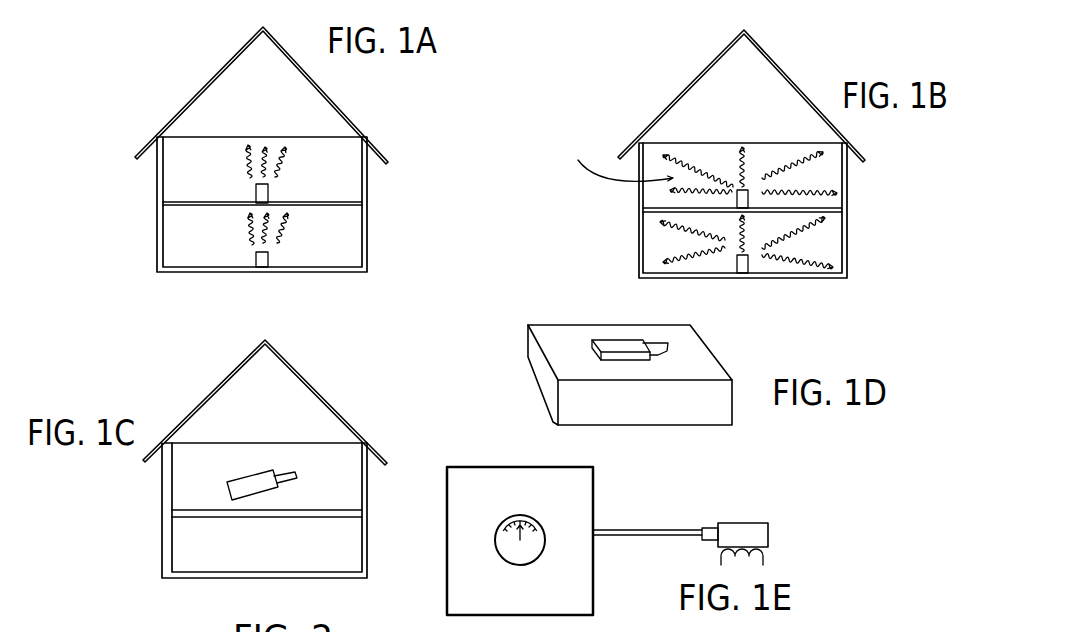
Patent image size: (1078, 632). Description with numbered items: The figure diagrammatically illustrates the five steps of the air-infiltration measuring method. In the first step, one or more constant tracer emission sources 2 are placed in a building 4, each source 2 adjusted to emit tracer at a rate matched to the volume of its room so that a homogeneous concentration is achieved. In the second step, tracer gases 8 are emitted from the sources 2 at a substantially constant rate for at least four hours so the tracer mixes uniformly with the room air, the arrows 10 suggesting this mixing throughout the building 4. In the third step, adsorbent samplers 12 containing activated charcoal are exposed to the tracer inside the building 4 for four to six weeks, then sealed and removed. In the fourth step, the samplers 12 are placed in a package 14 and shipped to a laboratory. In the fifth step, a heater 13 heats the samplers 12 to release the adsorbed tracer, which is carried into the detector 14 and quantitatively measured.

In FIG. 1A, the constant tracer emission source 2 is at (256, 193).
In FIG. 1B, the constant tracer emission source 2 is at (747, 195).
In FIG. 1A, the building 4 is at (198, 97).
In FIG. 1B, the building 4 is at (803, 92).
In FIG. 1C, the building 4 is at (213, 393).
In FIG. 1B, the tracer gases 8 is at (770, 143).
In FIG. 1B, the radiation reflected within the house 10 is at (615, 161).
In FIG. 1C, the adsorbent sampler 12 is at (253, 487).
In FIG. 1D, the adsorbent sampler 12 is at (618, 348).
In FIG. 1E, the adsorbent sampler 12 is at (748, 535).
In FIG. 1E, the heater 13 is at (767, 562).
In FIG. 1D, the package / detector 14 is at (548, 333).
In FIG. 1E, the package / detector 14 is at (578, 487).